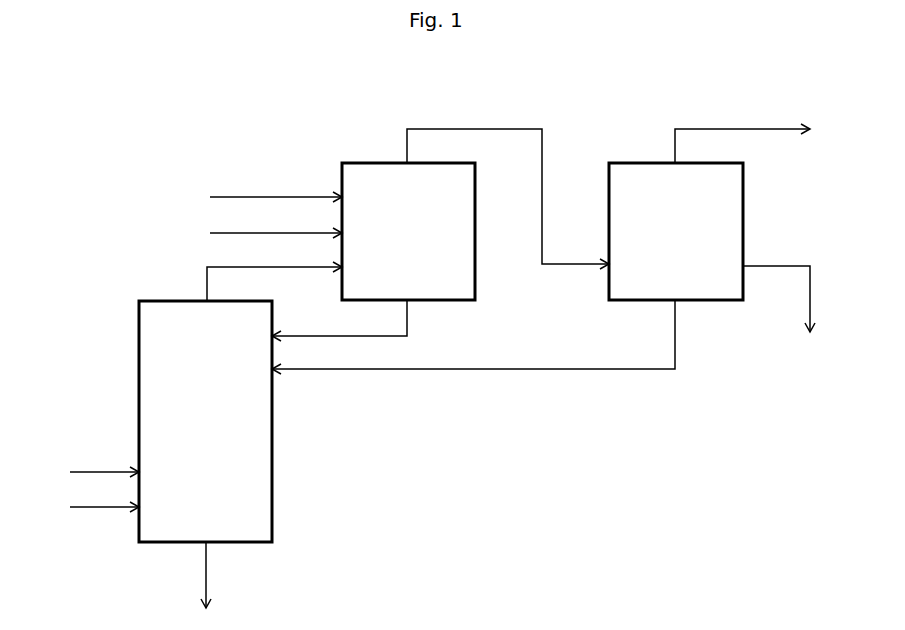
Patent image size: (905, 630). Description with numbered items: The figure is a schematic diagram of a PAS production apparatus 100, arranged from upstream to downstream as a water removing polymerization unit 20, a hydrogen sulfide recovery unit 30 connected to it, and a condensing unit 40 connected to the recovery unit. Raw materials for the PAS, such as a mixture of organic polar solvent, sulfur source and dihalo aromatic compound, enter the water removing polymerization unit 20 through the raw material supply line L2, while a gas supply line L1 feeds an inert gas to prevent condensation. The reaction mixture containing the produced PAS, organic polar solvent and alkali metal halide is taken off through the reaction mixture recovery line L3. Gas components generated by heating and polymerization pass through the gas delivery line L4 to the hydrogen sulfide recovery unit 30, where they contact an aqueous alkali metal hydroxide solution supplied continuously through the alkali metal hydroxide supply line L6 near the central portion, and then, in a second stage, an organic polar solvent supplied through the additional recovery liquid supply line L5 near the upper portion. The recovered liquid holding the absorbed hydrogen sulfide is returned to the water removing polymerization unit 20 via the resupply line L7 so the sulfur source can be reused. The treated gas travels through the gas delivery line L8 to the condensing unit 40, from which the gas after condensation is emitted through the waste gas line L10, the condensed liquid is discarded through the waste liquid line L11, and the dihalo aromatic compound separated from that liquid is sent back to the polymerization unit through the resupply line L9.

The PAS production apparatus 100 is at (106, 84).
The water removing polymerization unit 20 is at (273, 482).
The hydrogen sulfide recovery unit 30 is at (424, 163).
The condensing unit 40 is at (691, 163).
The gas supply line L1 is at (93, 472).
The raw material supply line L2 is at (107, 507).
The reaction mixture recovery line L3 is at (207, 572).
The gas delivery line L4 is at (215, 267).
The additional recovery liquid supply line L5 is at (218, 197).
The alkali metal hydroxide supply line L6 is at (218, 233).
The resupply line L7 is at (407, 328).
The gas delivery line L8 is at (476, 129).
The resupply line L9 is at (676, 329).
The waste gas line L10 is at (744, 129).
The waste liquid line L11 is at (779, 266).